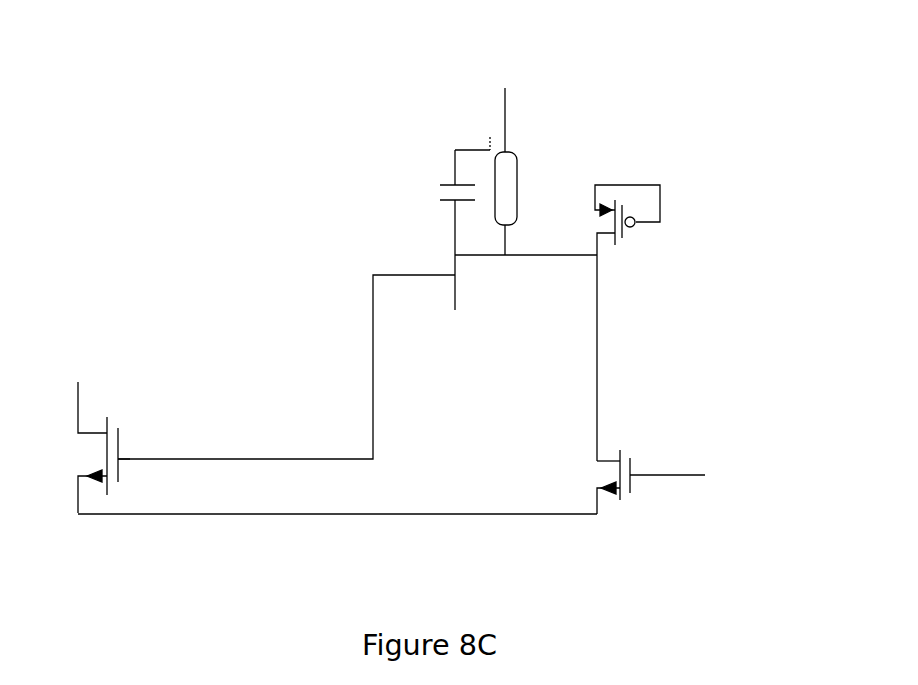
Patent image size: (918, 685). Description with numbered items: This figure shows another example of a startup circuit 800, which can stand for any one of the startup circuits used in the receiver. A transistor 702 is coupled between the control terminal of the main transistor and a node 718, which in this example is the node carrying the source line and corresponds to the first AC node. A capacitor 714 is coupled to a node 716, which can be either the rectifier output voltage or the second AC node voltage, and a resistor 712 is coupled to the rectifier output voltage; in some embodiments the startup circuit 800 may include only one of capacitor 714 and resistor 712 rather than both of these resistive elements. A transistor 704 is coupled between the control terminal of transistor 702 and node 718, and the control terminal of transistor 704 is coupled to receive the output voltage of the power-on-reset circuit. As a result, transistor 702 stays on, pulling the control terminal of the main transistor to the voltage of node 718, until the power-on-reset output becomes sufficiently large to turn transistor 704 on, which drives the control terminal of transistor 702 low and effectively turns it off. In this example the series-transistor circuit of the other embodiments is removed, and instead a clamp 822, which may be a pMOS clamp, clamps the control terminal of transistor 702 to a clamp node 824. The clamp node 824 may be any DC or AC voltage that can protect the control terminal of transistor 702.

The startup circuit 800 is at (228, 258).
The node 716 is at (432, 120).
The capacitor C1 714 is at (450, 180).
The resistor R1 712 is at (518, 168).
The transistor M1 702 is at (102, 458).
The transistor M2 704 is at (620, 445).
The node 718 is at (133, 520).
The clamp 822 is at (633, 227).
The clamp node 824 is at (668, 207).